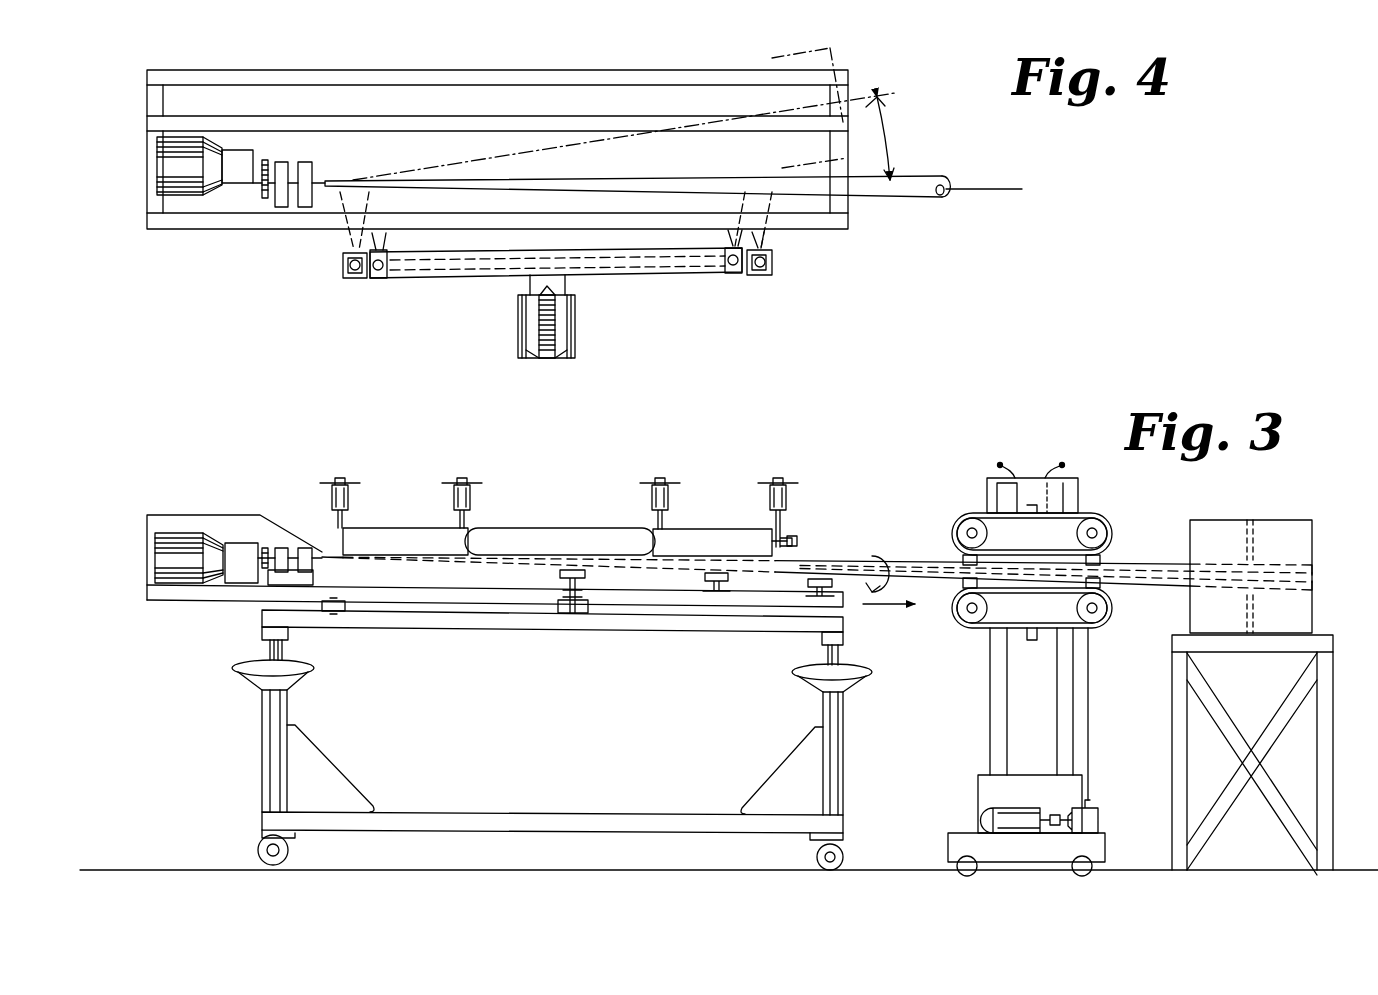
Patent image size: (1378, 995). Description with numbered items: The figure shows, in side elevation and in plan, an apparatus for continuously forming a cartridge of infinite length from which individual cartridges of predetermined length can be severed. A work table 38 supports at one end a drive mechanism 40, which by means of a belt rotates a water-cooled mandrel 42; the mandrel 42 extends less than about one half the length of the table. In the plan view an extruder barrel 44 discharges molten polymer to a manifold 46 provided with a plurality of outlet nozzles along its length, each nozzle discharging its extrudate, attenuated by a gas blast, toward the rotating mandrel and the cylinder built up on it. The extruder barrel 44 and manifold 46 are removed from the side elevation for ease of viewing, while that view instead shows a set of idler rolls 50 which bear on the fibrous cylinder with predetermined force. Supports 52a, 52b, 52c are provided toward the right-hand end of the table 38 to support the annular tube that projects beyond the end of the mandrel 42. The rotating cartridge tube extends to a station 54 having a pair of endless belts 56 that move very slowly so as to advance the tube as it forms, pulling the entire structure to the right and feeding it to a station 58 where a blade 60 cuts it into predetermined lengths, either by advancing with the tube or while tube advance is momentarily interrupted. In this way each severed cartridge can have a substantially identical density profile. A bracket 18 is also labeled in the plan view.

In FIG. 4, the bracket 18 is at (380, 250).
In FIG. 3, the work table 38 is at (505, 630).
In FIG. 4, the drive mechanism 40 is at (195, 190).
In FIG. 3, the drive mechanism 40 is at (178, 556).
In FIG. 4, the water-cooled mandrel 42 is at (327, 181).
In FIG. 3, the water-cooled mandrel 42 is at (355, 563).
In FIG. 4, the extruder barrel 44 is at (565, 335).
In FIG. 4, the manifold 46 is at (772, 258).
In FIG. 3, the idler rolls 50 is at (360, 527).
In FIG. 3, the support 52a is at (573, 612).
In FIG. 3, the support 52b is at (717, 591).
In FIG. 3, the support 52c is at (820, 597).
In FIG. 3, the station 54 is at (1038, 670).
In FIG. 3, the endless belts 56 is at (1100, 530).
In FIG. 3, the station 58 is at (1182, 548).
In FIG. 3, the blade 60 is at (1256, 535).